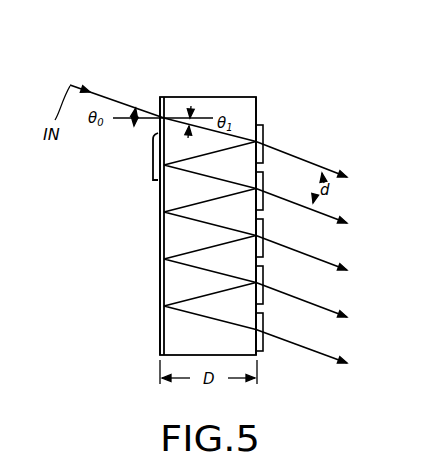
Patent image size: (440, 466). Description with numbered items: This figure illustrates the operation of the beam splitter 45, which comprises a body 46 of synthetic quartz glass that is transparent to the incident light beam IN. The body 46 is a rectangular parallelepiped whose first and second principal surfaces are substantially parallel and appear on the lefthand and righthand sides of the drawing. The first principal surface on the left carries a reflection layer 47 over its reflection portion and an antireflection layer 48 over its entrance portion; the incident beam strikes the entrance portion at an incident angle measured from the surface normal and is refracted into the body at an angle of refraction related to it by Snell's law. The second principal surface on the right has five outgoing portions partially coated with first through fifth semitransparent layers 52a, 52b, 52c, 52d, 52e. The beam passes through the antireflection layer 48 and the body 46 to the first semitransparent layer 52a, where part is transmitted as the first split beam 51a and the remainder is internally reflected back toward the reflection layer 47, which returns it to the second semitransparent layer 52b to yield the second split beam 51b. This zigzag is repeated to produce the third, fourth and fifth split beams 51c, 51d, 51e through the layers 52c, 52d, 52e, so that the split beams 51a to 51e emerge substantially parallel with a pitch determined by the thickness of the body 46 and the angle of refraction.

The beam splitter 45 is at (209, 80).
The body 46 is at (240, 97).
The reflection layer 47 is at (158, 232).
The antireflection layer 48 is at (157, 131).
The first split beam 51a is at (333, 168).
The second split beam 51b is at (333, 213).
The third split beam 51c is at (333, 260).
The fourth split beam 51d is at (333, 307).
The fifth split beam 51e is at (318, 342).
The first semitransparent layer 52a is at (264, 133).
The second semitransparent layer 52b is at (264, 180).
The third semitransparent layer 52c is at (264, 227).
The fourth semitransparent layer 52d is at (264, 274).
The fifth semitransparent layer 52e is at (264, 321).